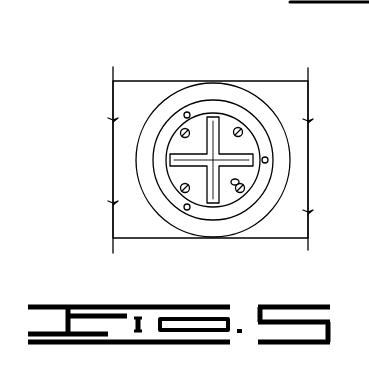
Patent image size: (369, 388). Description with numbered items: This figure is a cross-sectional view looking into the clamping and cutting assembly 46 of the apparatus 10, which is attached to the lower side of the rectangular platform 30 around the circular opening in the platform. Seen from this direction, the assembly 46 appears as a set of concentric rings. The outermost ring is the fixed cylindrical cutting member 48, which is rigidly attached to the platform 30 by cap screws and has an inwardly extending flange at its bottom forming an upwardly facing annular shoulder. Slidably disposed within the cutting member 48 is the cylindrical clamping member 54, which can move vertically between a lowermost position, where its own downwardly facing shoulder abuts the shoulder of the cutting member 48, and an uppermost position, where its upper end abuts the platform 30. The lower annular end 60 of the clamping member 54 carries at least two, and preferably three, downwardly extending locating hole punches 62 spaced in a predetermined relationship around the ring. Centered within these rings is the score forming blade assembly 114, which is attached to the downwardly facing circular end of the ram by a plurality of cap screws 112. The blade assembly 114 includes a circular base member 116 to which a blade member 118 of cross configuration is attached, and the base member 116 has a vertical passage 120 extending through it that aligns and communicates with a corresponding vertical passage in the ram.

The sensor assembly 10 is at (131, 70).
The platform 30 is at (142, 82).
The clamping and cutting assembly 46 is at (135, 207).
The cutting member 48 is at (245, 218).
The clamping member 54 is at (243, 107).
The lower annular end 60 is at (222, 108).
The locating hole punches 62 is at (183, 113).
The cap screws 112 is at (194, 128).
The score forming blade assembly 114 is at (207, 116).
The base member 116 is at (227, 195).
The blade member 118 is at (192, 228).
The vertical passage 120 is at (240, 182).